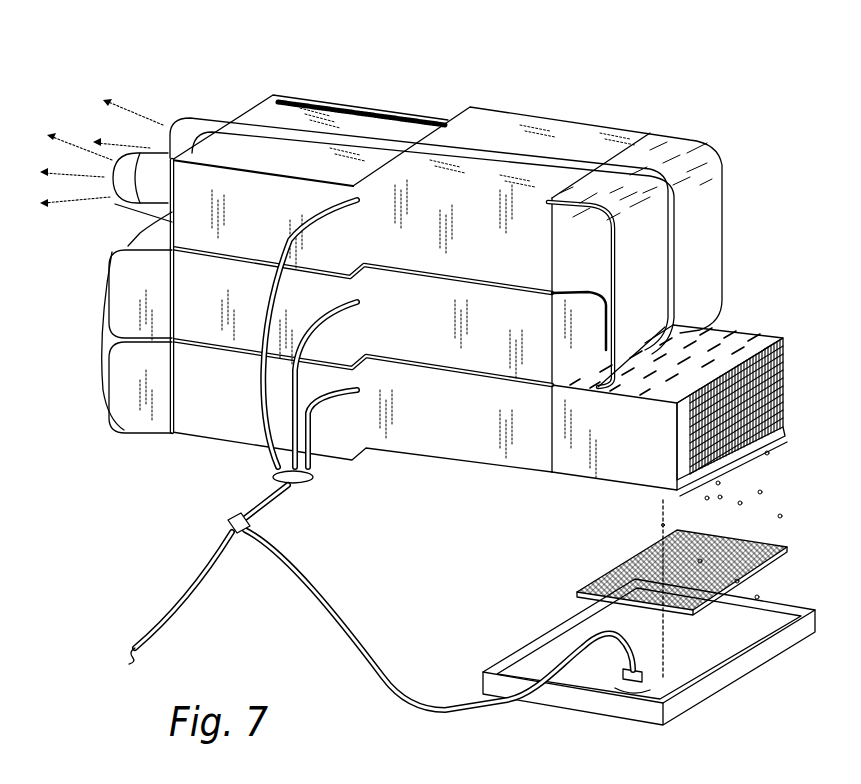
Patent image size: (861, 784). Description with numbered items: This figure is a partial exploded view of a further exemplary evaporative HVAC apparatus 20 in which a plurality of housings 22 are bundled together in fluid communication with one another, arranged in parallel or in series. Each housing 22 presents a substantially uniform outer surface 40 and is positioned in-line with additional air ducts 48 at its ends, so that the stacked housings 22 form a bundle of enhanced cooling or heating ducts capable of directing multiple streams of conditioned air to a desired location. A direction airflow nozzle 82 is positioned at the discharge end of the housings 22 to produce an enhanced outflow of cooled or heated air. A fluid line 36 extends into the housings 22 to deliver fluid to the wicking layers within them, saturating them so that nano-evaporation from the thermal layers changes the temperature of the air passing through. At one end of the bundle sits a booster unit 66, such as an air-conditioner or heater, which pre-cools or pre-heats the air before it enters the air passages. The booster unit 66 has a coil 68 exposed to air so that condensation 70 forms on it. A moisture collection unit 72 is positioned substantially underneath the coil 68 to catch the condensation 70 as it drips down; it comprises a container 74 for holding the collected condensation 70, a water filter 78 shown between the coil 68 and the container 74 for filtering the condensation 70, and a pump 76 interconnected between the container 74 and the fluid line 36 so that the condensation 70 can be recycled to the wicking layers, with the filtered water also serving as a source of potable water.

The evaporative HVAC apparatus 20 is at (568, 86).
The housing 22 is at (252, 150).
The fluid line 36 is at (212, 557).
The outer surface 40 is at (360, 118).
The air duct 48 is at (690, 150).
The booster unit 66 is at (678, 379).
The coil 68 is at (766, 362).
The condensation 70 is at (742, 498).
The moisture collection unit 72 is at (623, 643).
The container 74 is at (697, 688).
The pump 76 is at (622, 682).
The water filter 78 is at (640, 568).
The direction airflow nozzle 82 is at (197, 127).